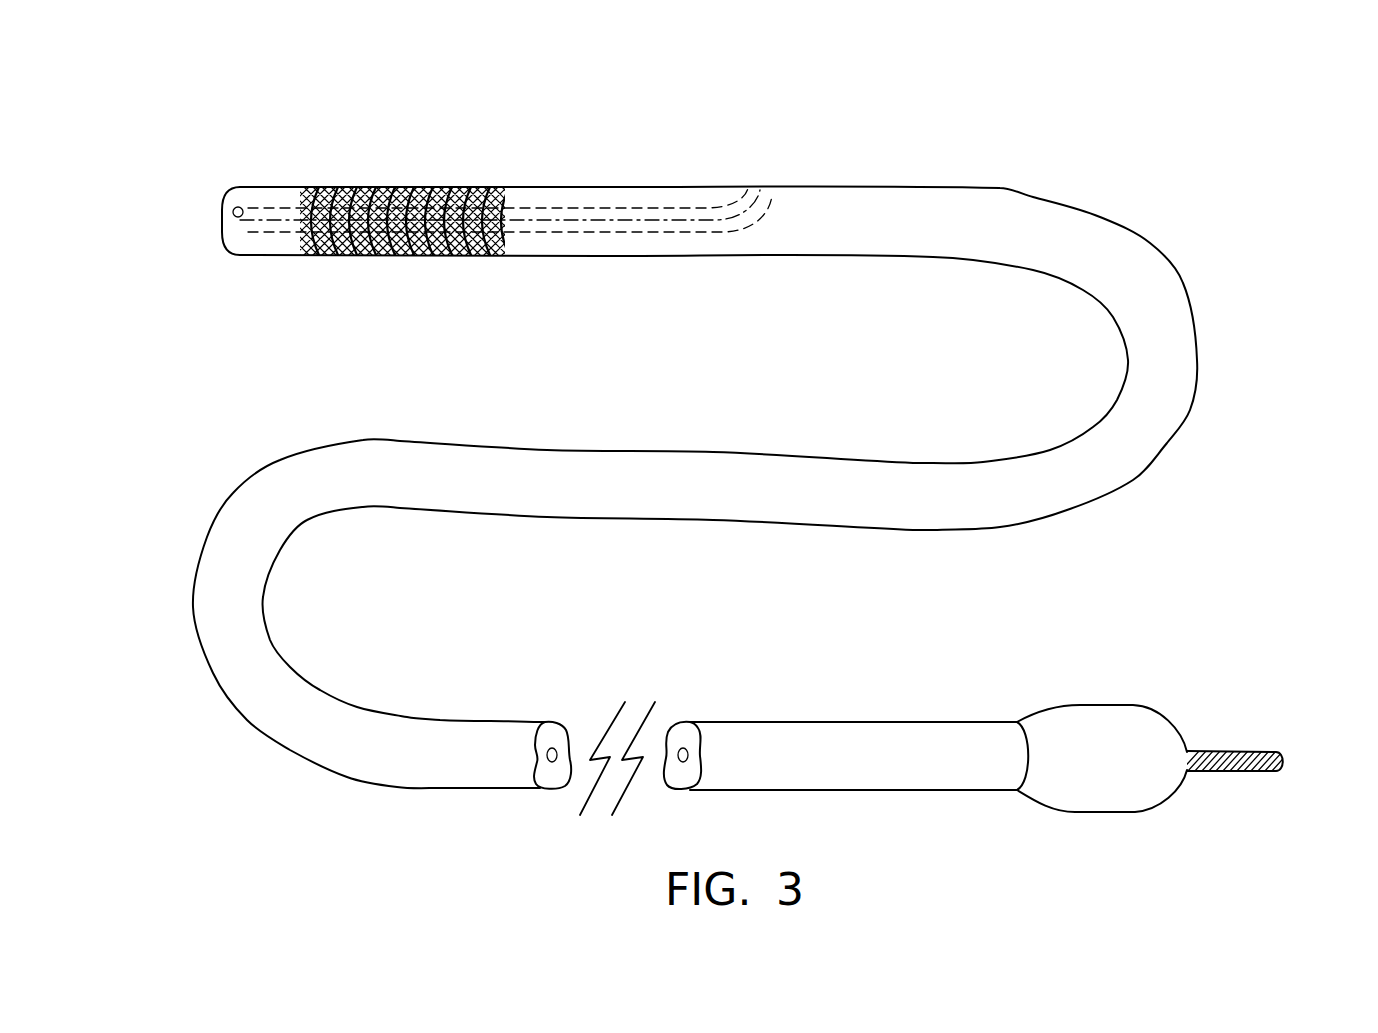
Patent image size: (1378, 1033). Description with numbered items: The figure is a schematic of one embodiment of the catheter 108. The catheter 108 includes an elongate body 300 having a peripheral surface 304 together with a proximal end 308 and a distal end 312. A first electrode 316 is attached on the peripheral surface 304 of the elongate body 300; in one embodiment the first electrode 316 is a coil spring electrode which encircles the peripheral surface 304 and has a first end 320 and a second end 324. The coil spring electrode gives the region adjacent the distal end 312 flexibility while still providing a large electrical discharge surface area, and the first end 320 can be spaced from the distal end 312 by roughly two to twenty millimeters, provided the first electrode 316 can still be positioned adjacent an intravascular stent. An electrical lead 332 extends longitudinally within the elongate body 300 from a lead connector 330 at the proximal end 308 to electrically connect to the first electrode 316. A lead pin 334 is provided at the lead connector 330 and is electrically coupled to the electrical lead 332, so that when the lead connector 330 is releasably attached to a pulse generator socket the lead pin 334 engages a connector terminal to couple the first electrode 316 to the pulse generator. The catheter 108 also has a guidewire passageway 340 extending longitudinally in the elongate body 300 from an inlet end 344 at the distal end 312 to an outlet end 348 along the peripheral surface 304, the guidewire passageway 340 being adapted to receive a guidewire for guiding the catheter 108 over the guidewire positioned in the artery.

The catheter 108 is at (1150, 145).
The elongate body 300 is at (1080, 212).
The peripheral surface 304 is at (627, 186).
The proximal end 308 is at (1287, 742).
The distal end 312 is at (222, 236).
The first electrode 316 is at (405, 195).
The first end 320 is at (317, 175).
The second end 324 is at (517, 175).
The lead connector 330 is at (1108, 813).
The electrical lead 332 is at (557, 738).
The lead pin 334 is at (1233, 768).
The guidewire passageway 340 is at (578, 228).
The inlet end 344 is at (233, 212).
The outlet end 348 is at (758, 192).